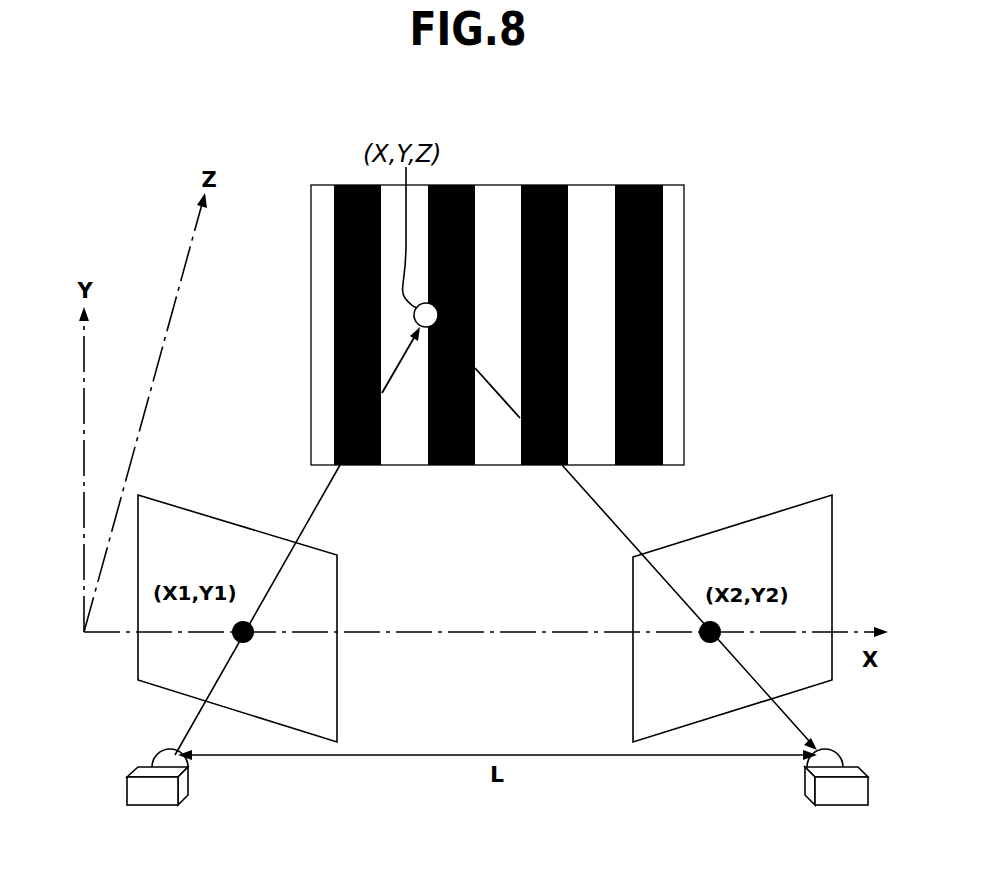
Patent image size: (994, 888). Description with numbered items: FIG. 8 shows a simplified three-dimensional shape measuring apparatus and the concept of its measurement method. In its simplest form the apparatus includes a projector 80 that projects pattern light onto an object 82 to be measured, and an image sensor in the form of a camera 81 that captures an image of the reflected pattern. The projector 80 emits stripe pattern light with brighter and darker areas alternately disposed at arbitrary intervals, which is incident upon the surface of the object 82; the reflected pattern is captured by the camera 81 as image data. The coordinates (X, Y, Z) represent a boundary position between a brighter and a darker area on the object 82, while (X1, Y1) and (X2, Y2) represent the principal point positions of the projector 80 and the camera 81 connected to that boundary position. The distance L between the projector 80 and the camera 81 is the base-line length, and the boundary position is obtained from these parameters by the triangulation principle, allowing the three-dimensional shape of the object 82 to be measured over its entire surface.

The projector 80 is at (157, 797).
The camera 81 is at (842, 797).
The object to be measured 82 is at (675, 322).